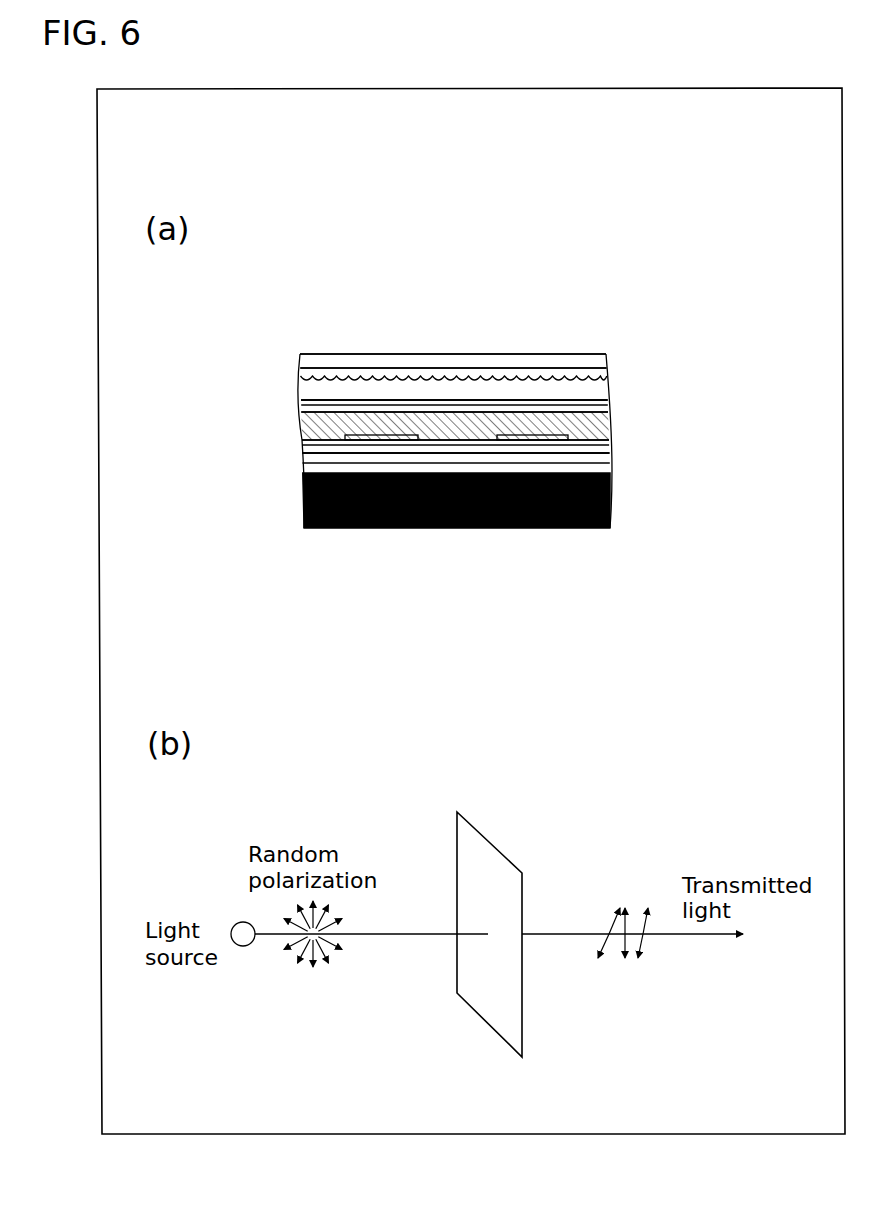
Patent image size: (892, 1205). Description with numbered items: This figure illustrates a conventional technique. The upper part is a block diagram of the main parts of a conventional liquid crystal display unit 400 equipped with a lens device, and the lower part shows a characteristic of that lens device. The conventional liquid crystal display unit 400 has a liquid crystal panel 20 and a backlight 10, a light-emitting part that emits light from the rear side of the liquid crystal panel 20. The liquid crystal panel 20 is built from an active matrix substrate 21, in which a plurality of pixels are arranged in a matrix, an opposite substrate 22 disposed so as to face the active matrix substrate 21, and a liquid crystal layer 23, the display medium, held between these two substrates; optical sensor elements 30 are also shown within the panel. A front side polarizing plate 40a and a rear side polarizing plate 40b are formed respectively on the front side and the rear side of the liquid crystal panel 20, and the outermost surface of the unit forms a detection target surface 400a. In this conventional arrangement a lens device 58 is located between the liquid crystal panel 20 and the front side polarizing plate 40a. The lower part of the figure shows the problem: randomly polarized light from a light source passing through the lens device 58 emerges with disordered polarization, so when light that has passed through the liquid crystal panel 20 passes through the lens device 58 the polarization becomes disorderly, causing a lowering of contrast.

The conventional liquid crystal display unit 400 is at (594, 253).
The detection target surface 400a is at (330, 354).
The optical sensor elements 30 is at (535, 432).
The front side polarizing plate 40a is at (603, 358).
The lens device 58 is at (597, 384).
The opposite substrate 22 is at (610, 408).
The liquid crystal layer 23 is at (597, 428).
The liquid crystal panel 20 is at (648, 397).
The active matrix substrate 21 is at (610, 447).
The rear side polarizing plate 40b is at (603, 457).
The backlight 10 is at (600, 510).